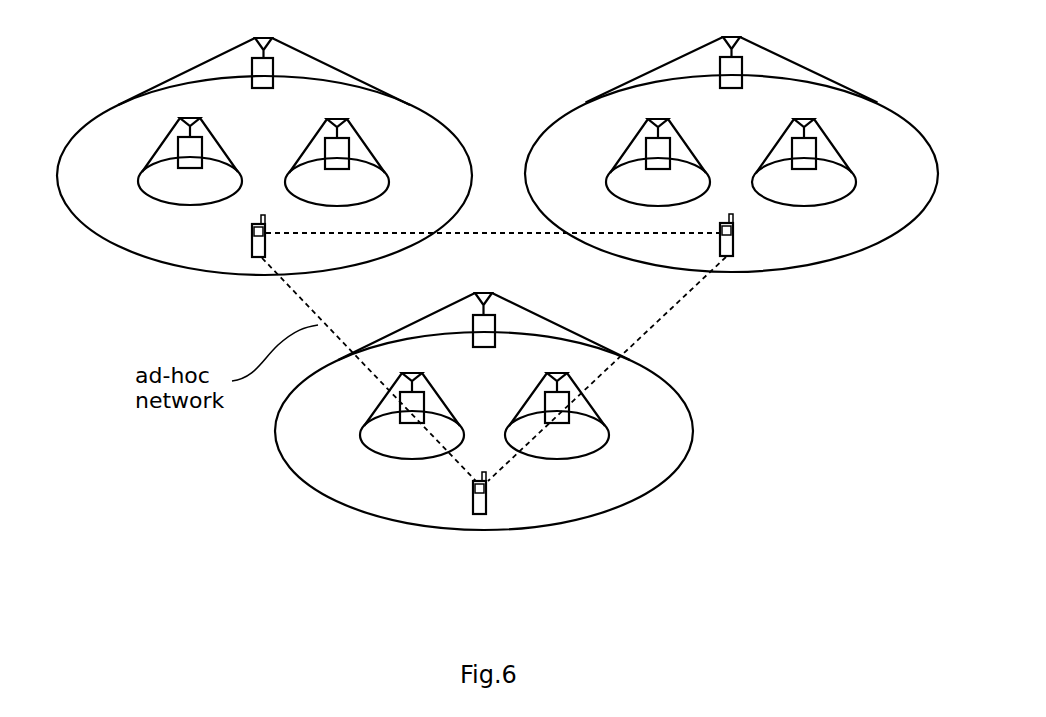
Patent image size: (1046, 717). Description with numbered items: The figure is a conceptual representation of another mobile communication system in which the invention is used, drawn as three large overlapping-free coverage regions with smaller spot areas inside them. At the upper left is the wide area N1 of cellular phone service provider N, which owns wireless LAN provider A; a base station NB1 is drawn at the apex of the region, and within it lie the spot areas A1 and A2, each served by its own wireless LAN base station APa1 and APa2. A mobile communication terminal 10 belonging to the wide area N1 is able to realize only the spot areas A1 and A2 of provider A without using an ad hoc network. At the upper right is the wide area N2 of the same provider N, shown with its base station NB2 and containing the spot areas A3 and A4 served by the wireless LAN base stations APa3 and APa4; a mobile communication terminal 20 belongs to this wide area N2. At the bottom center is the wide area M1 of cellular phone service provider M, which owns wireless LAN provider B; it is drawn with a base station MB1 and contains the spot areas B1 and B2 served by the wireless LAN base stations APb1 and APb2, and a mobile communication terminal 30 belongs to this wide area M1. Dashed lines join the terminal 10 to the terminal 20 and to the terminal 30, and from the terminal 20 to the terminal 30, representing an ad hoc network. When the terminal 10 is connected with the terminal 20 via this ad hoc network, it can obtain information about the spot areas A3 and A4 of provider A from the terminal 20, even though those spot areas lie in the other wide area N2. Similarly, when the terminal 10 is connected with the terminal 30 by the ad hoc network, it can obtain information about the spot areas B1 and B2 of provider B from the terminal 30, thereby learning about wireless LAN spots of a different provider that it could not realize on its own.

The wide area N1 is at (157, 258).
The wide area N2 is at (625, 260).
The wide area M1 is at (377, 517).
The base station of network N1 NB1 is at (273, 62).
The base station of network N2 NB2 is at (743, 58).
The base station of network M1 MB1 is at (497, 315).
The wireless LAN base station APa1 is at (227, 107).
The wireless LAN base station APa2 is at (322, 133).
The wireless LAN base station APa3 is at (695, 107).
The wireless LAN base station APa4 is at (790, 133).
The wireless LAN base station APb1 is at (448, 363).
The wireless LAN base station APb2 is at (547, 390).
The spot area A1 is at (188, 205).
The spot area A2 is at (387, 182).
The spot area A3 is at (608, 182).
The spot area A4 is at (800, 205).
The spot area B1 is at (358, 438).
The spot area B2 is at (557, 463).
The mobile communication terminal 10 is at (250, 230).
The mobile communication terminal 20 is at (737, 228).
The mobile communication terminal 30 is at (488, 502).